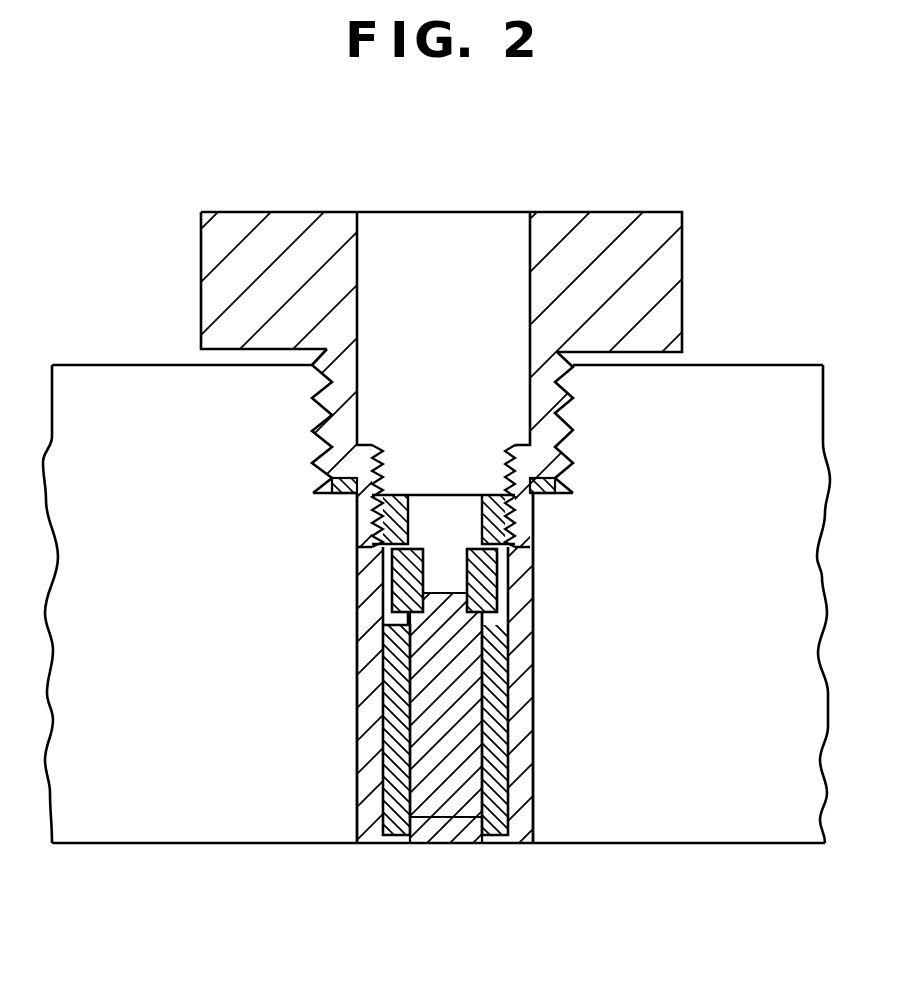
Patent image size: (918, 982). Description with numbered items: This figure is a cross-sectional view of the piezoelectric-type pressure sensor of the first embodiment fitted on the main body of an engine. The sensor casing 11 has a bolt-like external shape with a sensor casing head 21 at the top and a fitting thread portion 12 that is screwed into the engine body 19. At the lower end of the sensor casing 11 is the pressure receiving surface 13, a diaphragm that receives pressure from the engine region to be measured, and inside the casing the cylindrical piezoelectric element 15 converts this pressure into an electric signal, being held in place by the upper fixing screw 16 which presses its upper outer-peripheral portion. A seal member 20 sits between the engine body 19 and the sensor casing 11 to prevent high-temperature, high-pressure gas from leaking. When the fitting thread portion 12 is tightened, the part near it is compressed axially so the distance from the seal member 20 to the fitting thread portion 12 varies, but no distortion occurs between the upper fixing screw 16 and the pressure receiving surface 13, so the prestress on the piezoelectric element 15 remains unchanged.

The sensor casing 11 is at (357, 722).
The fitting thread portion 12 is at (313, 403).
The pressure receiving surface 13 is at (410, 845).
The piezoelectric element 15 is at (388, 577).
The upper fixing screw 16 is at (393, 495).
The engine body 19 is at (770, 365).
The seal member 20 is at (357, 497).
The sensor casing head 21 is at (657, 212).